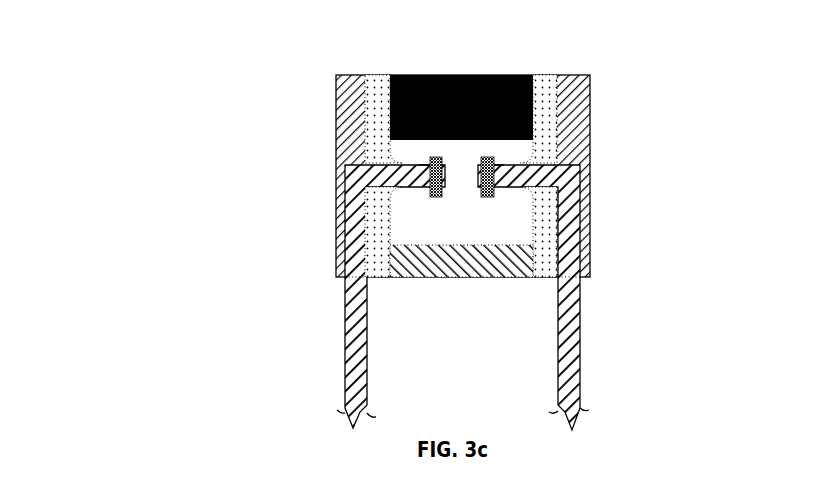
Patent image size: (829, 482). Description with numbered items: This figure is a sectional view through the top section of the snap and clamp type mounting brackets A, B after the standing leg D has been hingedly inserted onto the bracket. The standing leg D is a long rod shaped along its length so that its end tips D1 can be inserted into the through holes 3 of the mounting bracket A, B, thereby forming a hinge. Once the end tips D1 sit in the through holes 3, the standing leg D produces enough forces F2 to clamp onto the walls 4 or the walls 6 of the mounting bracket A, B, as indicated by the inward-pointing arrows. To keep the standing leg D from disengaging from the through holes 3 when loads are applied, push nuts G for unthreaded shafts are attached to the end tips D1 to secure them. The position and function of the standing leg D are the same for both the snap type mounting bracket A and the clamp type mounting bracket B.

The through holes 3 is at (385, 165).
The walls 4 is at (363, 118).
The walls 6 is at (557, 255).
The push nuts G is at (488, 157).
The end tips D1 is at (418, 163).
The directions A, B is at (628, 217).
The forces F2 is at (340, 358).
The standing leg D is at (319, 410).